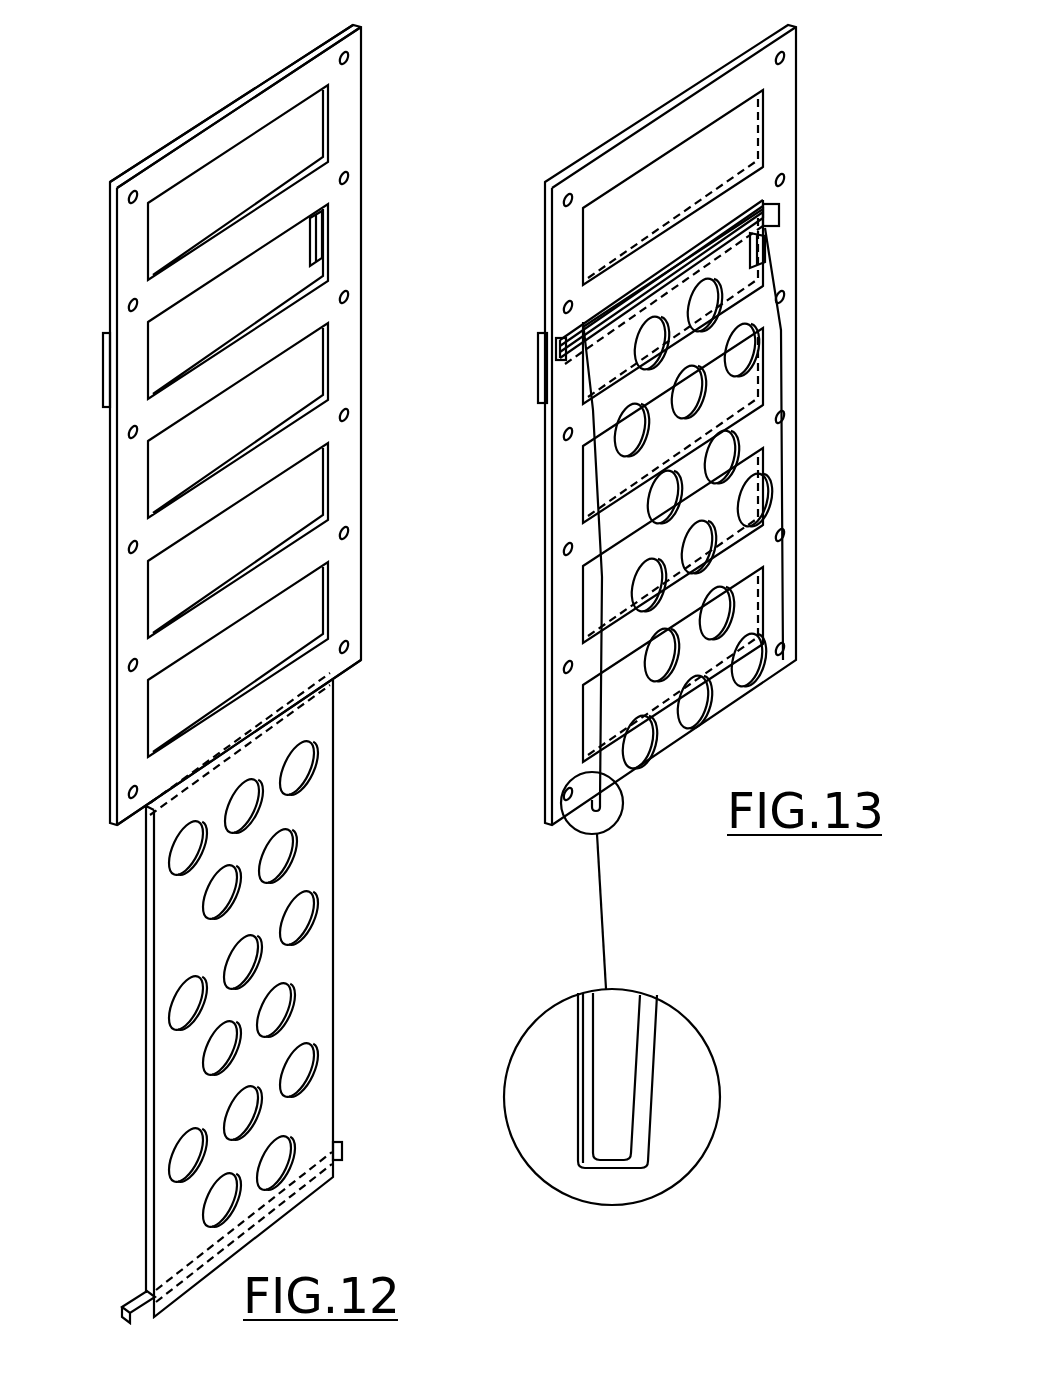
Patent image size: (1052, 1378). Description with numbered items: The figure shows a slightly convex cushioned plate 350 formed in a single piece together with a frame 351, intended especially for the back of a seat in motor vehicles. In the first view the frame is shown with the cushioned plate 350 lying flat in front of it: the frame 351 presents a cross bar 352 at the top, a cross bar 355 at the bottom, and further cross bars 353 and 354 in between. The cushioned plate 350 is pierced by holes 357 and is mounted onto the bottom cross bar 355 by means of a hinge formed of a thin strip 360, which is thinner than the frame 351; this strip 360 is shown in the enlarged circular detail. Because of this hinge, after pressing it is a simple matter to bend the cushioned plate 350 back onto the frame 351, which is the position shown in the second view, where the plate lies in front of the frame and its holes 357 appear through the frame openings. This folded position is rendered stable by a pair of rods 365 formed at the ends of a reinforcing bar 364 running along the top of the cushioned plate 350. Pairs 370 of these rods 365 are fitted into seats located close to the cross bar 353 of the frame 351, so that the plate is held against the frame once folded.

In FIG. 12, the cushioned plate 350 is at (256, 998).
In FIG. 13, the cushioned plate 350 is at (787, 463).
In FIG. 12, the frame 351 is at (343, 368).
In FIG. 13, the frame 351 is at (785, 124).
In FIG. 12, the cross bar 352 is at (318, 72).
In FIG. 12, the cross bar 353 is at (313, 187).
In FIG. 12, the cross bar 354 is at (313, 310).
In FIG. 12, the cross bar 355 is at (170, 766).
In FIG. 12, the holes 357 is at (298, 916).
In FIG. 12, the thin strip 360 is at (337, 677).
In FIG. 13, the thin strip 360 is at (612, 1168).
In FIG. 12, the reinforcing bar 364 is at (293, 1212).
In FIG. 13, the reinforcing bar 364 is at (668, 277).
In FIG. 12, the rods 365 is at (338, 1142).
In FIG. 13, the rods 365 is at (776, 213).
In FIG. 12, the pairs of rods 370 is at (320, 240).
In FIG. 13, the pairs of rods 370 is at (766, 257).